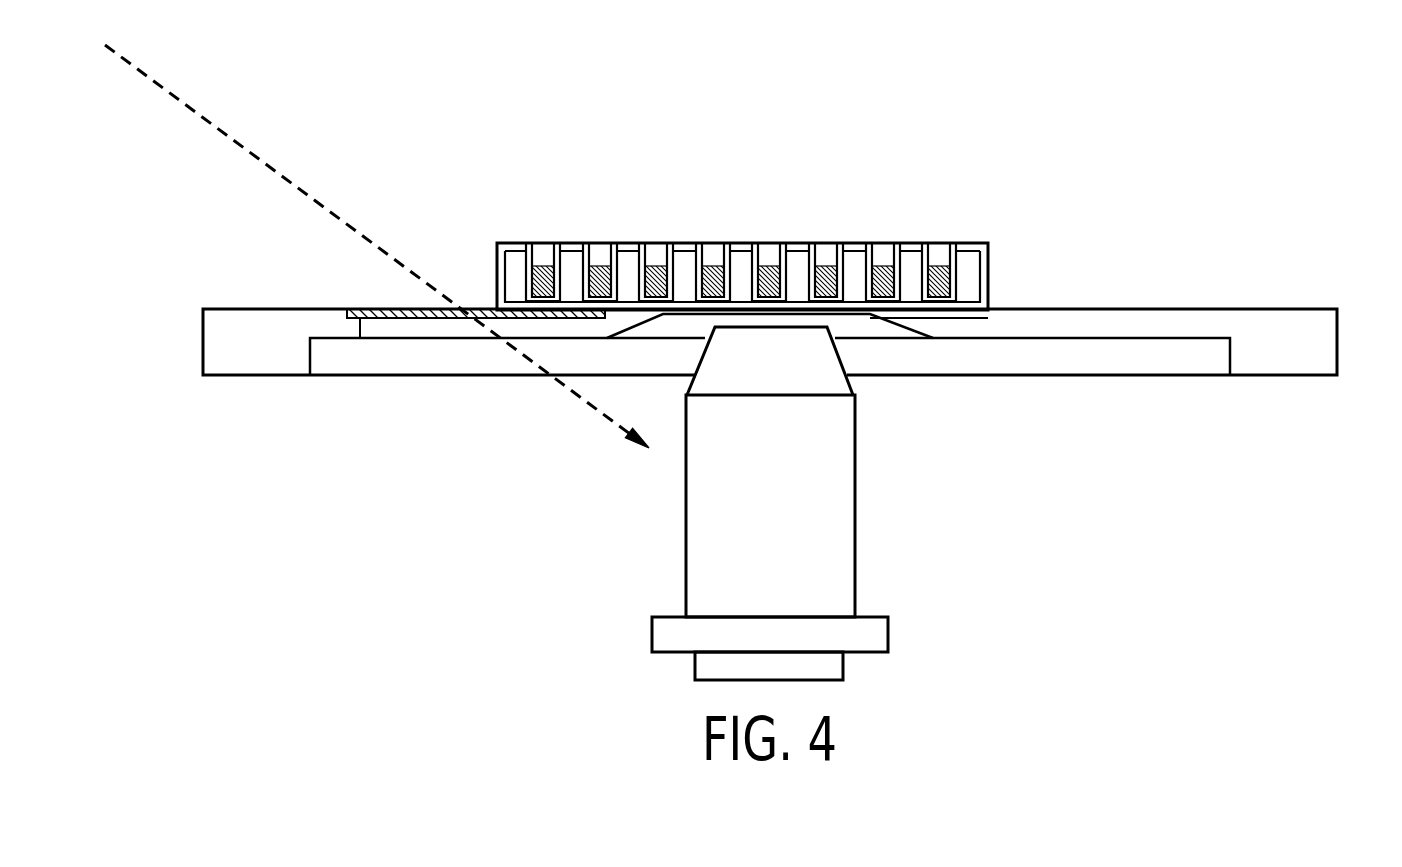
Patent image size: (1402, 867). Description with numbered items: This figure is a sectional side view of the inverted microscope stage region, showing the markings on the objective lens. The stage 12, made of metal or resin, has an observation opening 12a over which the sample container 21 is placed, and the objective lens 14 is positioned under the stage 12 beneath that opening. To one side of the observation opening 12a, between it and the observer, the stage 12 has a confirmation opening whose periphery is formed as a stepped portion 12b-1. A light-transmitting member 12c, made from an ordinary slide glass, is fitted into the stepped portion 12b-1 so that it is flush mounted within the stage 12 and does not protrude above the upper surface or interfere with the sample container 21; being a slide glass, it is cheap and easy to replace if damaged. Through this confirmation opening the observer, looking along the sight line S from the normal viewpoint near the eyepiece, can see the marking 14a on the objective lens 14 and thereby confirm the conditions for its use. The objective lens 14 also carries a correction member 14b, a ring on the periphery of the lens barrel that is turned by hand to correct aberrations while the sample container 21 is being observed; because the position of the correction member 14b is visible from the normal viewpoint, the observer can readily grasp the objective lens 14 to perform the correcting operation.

The sight line S is at (233, 140).
The stage 12 is at (1258, 327).
The observation opening 12a is at (865, 330).
The stepped portion 12b-1 is at (347, 311).
The light-transmitting member 12c is at (397, 307).
The objective lens 14 is at (791, 503).
The marking 14a is at (737, 502).
The correction member 14b is at (888, 635).
The sample container 21 is at (990, 256).